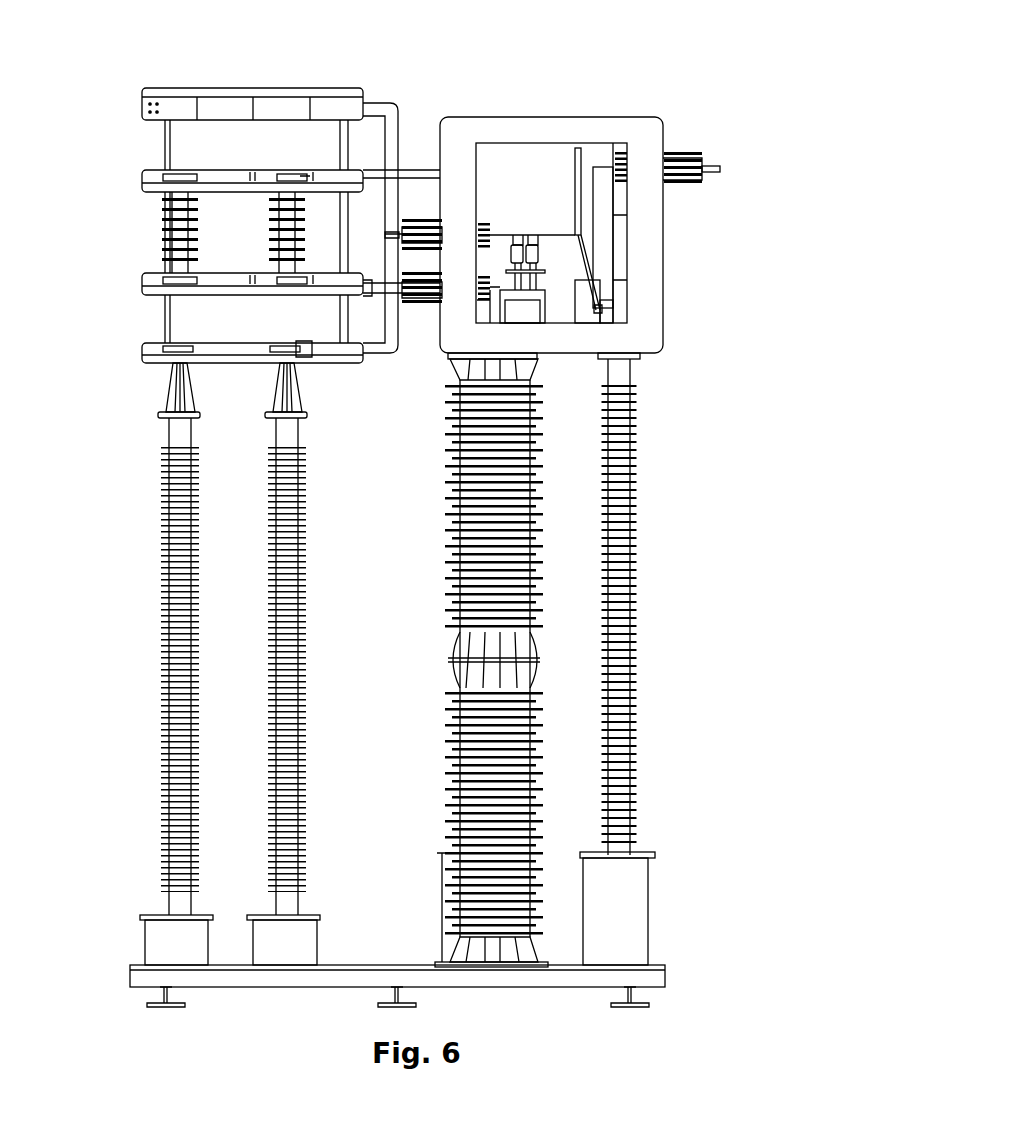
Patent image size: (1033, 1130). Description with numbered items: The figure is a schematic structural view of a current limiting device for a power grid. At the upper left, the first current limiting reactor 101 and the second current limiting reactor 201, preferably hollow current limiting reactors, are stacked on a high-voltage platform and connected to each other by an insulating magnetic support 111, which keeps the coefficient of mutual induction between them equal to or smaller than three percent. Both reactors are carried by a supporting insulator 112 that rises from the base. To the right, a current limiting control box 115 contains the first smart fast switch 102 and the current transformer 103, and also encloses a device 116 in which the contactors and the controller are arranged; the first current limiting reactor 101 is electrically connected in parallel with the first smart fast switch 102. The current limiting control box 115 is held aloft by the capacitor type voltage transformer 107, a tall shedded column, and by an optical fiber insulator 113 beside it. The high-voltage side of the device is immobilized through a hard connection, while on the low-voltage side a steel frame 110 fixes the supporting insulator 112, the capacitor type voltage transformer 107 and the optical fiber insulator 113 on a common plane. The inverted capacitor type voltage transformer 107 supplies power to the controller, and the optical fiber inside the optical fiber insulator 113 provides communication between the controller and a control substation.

The first current limiting reactor 101 is at (150, 175).
The second current limiting reactor 201 is at (150, 283).
The insulating magnetic support 111 is at (190, 218).
The supporting insulator 112 is at (290, 630).
The optical fiber insulator 113 is at (630, 489).
The current limiting control box 115 is at (537, 128).
The current transformer 103 is at (683, 150).
The first smart fast switch 102 is at (545, 300).
The device 116 is at (622, 298).
The capacitor type voltage transformer 107 is at (510, 533).
The steel frame 110 is at (645, 978).